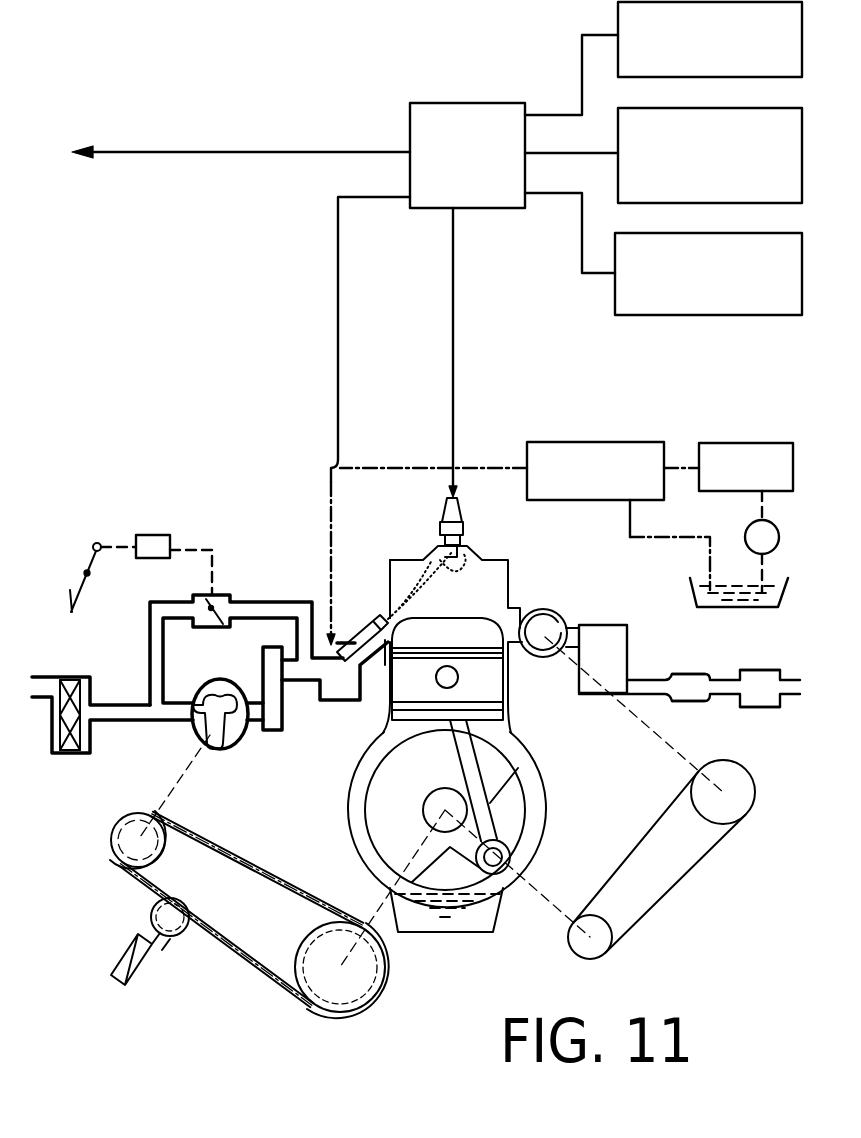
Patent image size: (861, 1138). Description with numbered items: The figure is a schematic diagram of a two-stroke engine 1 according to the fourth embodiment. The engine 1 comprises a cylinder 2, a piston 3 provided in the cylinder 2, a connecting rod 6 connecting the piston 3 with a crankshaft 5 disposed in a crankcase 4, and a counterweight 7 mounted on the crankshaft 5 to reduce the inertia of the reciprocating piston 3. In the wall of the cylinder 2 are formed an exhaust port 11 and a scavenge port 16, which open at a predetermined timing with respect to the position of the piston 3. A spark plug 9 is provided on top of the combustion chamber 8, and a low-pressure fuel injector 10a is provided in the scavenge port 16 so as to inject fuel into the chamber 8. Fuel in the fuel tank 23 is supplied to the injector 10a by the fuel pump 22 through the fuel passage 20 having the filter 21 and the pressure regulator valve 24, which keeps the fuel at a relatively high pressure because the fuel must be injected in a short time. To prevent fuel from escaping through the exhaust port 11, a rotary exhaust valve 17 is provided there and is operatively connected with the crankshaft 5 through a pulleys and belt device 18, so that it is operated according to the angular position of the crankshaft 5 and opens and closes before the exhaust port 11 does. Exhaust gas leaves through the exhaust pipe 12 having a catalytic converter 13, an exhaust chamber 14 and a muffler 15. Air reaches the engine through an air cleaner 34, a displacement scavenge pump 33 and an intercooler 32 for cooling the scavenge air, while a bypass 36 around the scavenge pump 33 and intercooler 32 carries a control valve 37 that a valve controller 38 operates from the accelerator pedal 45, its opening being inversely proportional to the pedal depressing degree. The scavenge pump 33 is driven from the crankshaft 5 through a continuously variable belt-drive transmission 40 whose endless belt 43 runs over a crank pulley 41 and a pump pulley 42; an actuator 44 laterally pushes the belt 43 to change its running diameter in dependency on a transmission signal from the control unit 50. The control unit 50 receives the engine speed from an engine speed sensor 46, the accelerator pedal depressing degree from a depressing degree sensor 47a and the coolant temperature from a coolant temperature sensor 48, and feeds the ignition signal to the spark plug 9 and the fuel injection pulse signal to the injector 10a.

The two-stroke engine 1 is at (518, 564).
The cylinder 2 is at (407, 587).
The piston 3 is at (493, 686).
The crankcase 4 is at (350, 788).
The crankshaft 5 is at (438, 800).
The connecting rod 6 is at (492, 830).
The counterweight 7 is at (368, 815).
The combustion chamber 8 is at (429, 558).
The spark plug 9 is at (461, 521).
The low-pressure fuel injector 10a is at (358, 634).
The exhaust port 11 is at (513, 620).
The exhaust pipe 12 is at (664, 664).
The catalytic converter 13 is at (610, 626).
The exhaust chamber 14 is at (692, 699).
The muffler 15 is at (760, 706).
The scavenge port 16 is at (384, 640).
The rotary exhaust valve 17 is at (557, 613).
The pulleys and belt device 18 is at (681, 880).
The fuel passage 20 is at (507, 444).
The filter 21 is at (728, 442).
The fuel pump 22 is at (745, 536).
The fuel tank 23 is at (690, 592).
The pressure regulator valve 24 is at (638, 442).
The intercooler 32 is at (270, 730).
The scavenge pump 33 is at (195, 737).
The throttle valve 34 is at (84, 754).
The bypass 36 is at (253, 602).
The control valve 37 is at (208, 612).
The valve controller 38 is at (154, 558).
The continuously variable belt-drive transmission 40 is at (231, 951).
The crank pulley 41 is at (384, 980).
The pump pulley 42 is at (127, 865).
The endless belt 43 is at (289, 882).
The actuator 44 is at (123, 970).
The accelerator pedal 45 is at (73, 610).
The engine speed sensor 46 is at (618, 22).
The accelerator pedal depressing degree sensor 47a is at (616, 122).
The coolant temperature sensor 48 is at (614, 248).
The control unit 50 is at (470, 100).